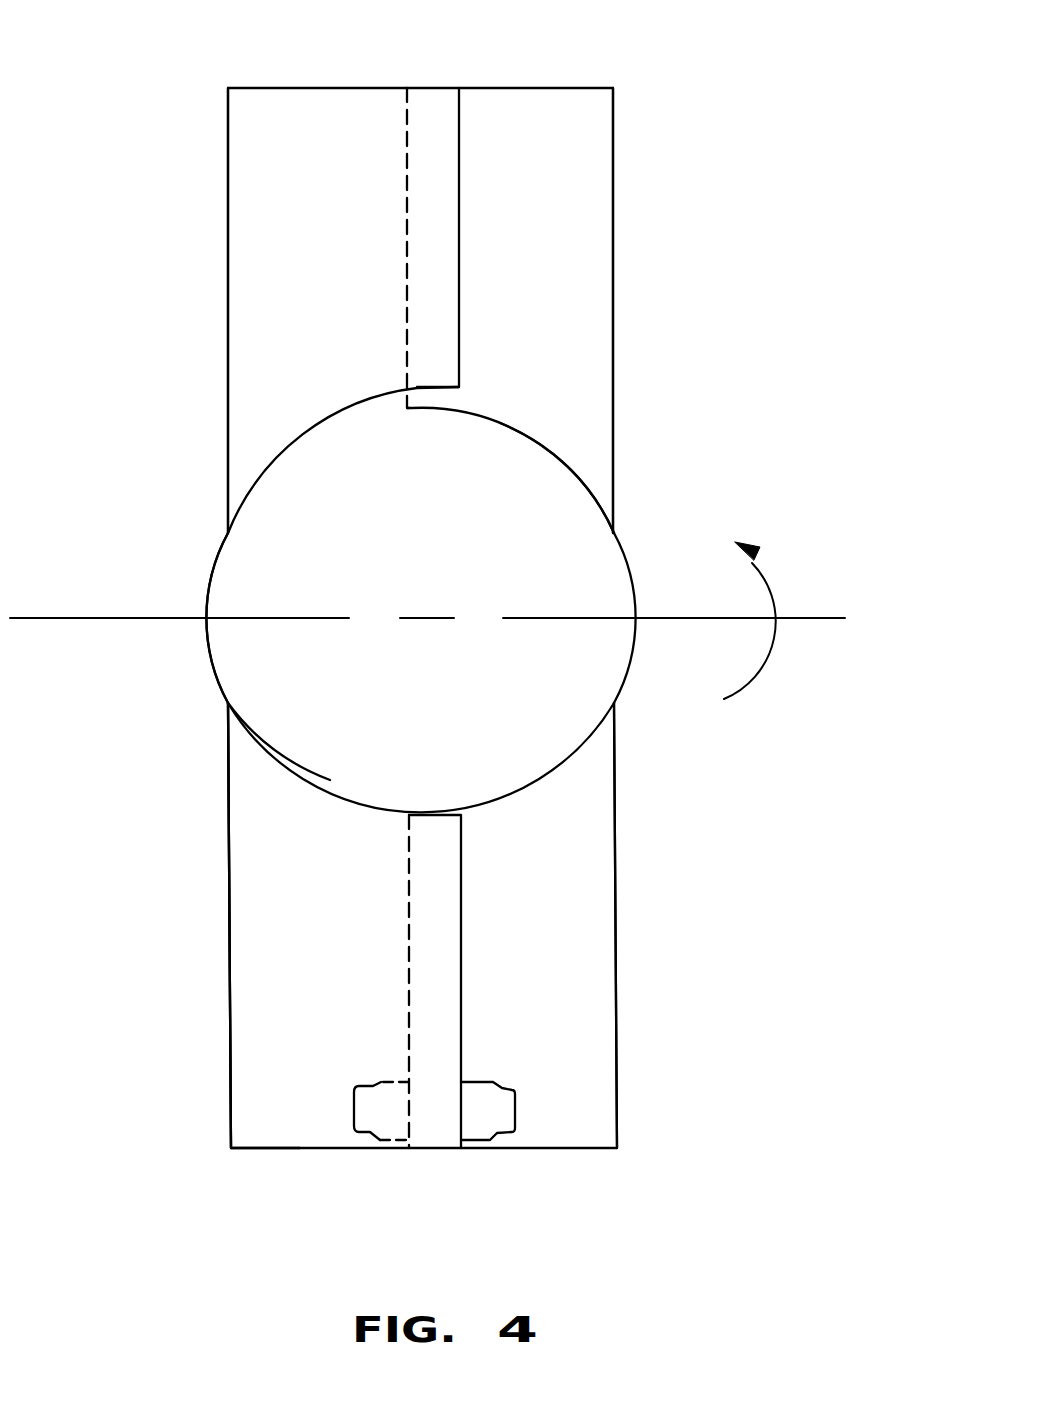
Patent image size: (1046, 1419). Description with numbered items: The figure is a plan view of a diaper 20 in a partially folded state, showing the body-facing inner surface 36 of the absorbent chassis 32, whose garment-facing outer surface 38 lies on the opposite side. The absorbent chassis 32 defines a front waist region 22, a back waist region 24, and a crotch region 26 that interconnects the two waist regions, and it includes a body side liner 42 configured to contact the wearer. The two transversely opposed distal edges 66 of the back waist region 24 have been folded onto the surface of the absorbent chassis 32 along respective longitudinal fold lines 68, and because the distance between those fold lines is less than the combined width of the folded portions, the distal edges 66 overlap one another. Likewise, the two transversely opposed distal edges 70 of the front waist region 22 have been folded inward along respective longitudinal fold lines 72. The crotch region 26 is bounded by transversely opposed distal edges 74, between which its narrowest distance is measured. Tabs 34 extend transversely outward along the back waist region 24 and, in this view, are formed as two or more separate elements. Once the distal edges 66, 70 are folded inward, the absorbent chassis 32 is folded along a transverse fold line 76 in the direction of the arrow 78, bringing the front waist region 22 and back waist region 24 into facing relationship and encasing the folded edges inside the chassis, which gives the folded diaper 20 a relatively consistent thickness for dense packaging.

The diaper 20 is at (795, 175).
The front waist region 22 is at (585, 157).
The back waist region 24 is at (595, 1106).
The crotch region 26 is at (268, 587).
The absorbent chassis 32 is at (587, 460).
The tabs 34 is at (493, 1097).
The body-facing inner surface 36 is at (279, 703).
The garment-facing outer surface 38 is at (248, 911).
The body side liner 42 is at (458, 490).
The transversely opposed distal edges of the back waist region 66 is at (300, 1170).
The longitudinal fold lines of the back waist region 68 is at (228, 1039).
The transversely opposed distal edges of the front waist region 70 is at (405, 225).
The longitudinal fold lines of the front waist region 72 is at (677, 273).
The transversely opposed distal edges of the crotch region 74 is at (670, 565).
The transverse fold line 76 is at (536, 618).
The arrow 78 is at (775, 592).